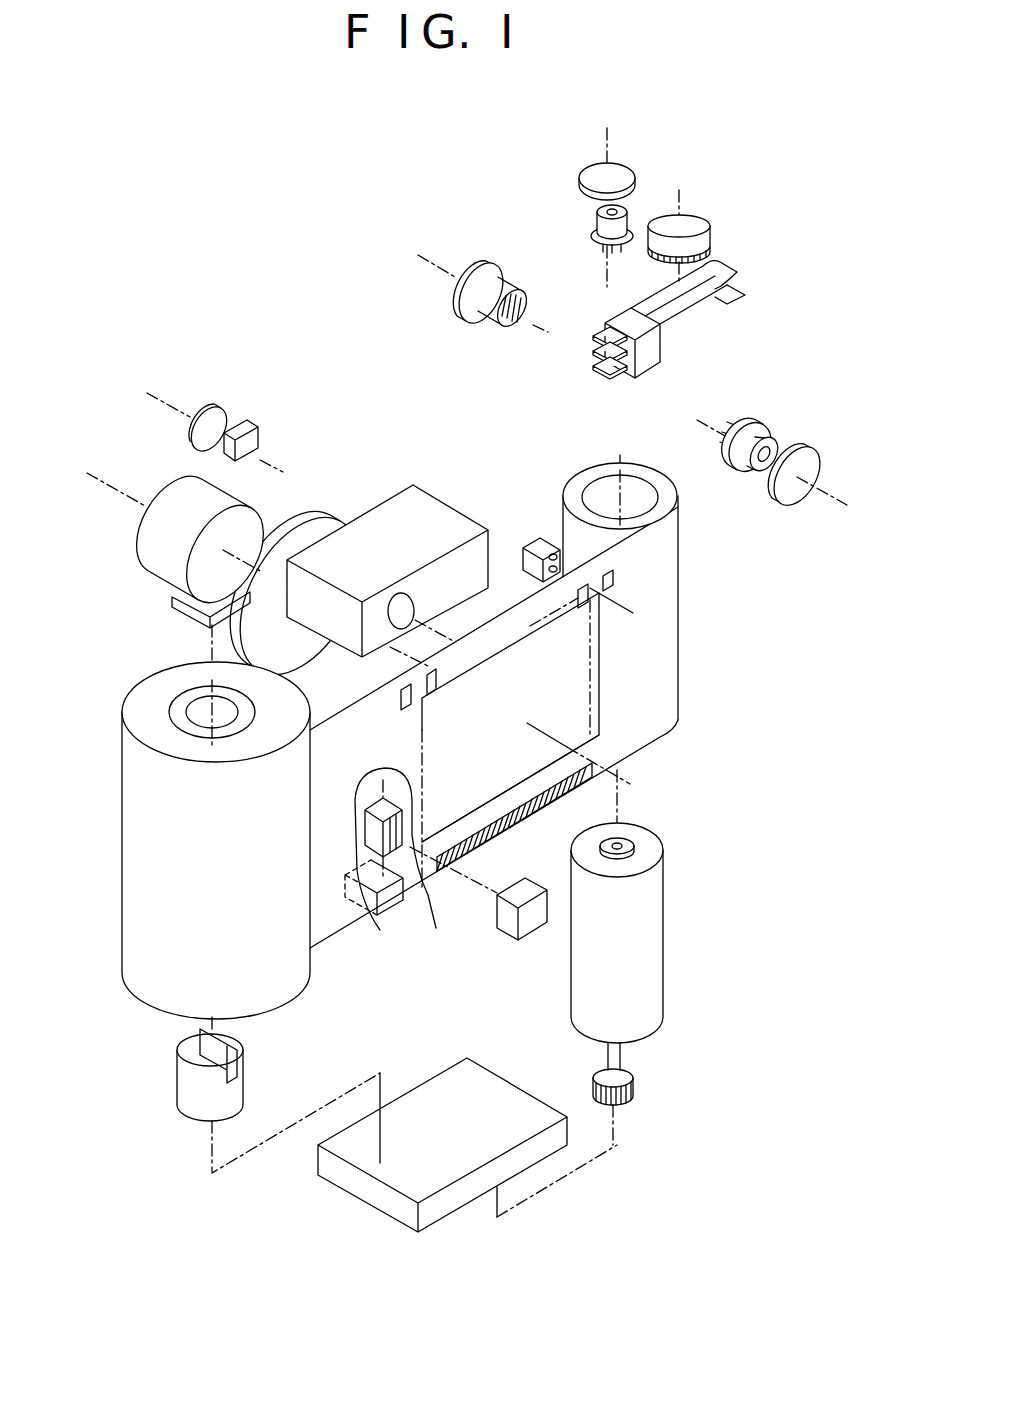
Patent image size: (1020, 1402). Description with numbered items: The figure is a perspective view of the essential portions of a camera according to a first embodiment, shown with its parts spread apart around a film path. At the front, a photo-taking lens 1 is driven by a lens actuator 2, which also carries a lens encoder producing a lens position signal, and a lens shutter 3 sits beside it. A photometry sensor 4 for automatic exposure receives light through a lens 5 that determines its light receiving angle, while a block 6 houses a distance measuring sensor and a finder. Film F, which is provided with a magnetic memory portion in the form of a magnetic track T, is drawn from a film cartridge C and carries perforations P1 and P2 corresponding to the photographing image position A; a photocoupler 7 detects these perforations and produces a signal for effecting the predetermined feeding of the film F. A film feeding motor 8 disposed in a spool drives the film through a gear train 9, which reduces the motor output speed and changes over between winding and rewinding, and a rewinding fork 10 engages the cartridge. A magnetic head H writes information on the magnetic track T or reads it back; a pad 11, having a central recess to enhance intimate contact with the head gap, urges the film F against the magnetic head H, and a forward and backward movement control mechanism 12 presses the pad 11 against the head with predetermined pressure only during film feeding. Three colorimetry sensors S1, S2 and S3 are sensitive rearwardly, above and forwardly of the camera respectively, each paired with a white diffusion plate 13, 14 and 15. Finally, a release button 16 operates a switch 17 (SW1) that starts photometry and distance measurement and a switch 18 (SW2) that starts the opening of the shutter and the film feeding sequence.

The photo-taking lens 1 is at (137, 544).
The lens actuator 2 is at (172, 606).
The lens shutter 3 is at (320, 520).
The photometry sensor 4 is at (258, 436).
The lens 5 is at (228, 413).
The block 6 is at (452, 500).
The photocoupler 7 is at (533, 533).
The film feeding motor 8 is at (663, 928).
The gear train 9 is at (321, 1176).
The rewinding fork 10 is at (177, 1080).
The pad 11 is at (405, 850).
The forward and backward movement control mechanism 12 is at (377, 918).
The white diffusion plate 13 is at (803, 448).
The white diffusion plate 14 is at (637, 178).
The white diffusion plate 15 is at (488, 265).
The release button 16 is at (710, 242).
The switch (SW1) 17 is at (717, 290).
The switch (SW2) 18 is at (720, 306).
The colorimetry sensor S1 is at (753, 428).
The colorimetry sensor S2 is at (593, 232).
The colorimetry sensor S3 is at (502, 318).
The perforation P1 is at (585, 604).
The perforation P2 is at (434, 693).
The photographing image position A is at (507, 792).
The magnetic track T is at (535, 806).
The film cartridge C is at (122, 866).
The film F is at (672, 633).
The magnetic head H is at (535, 938).